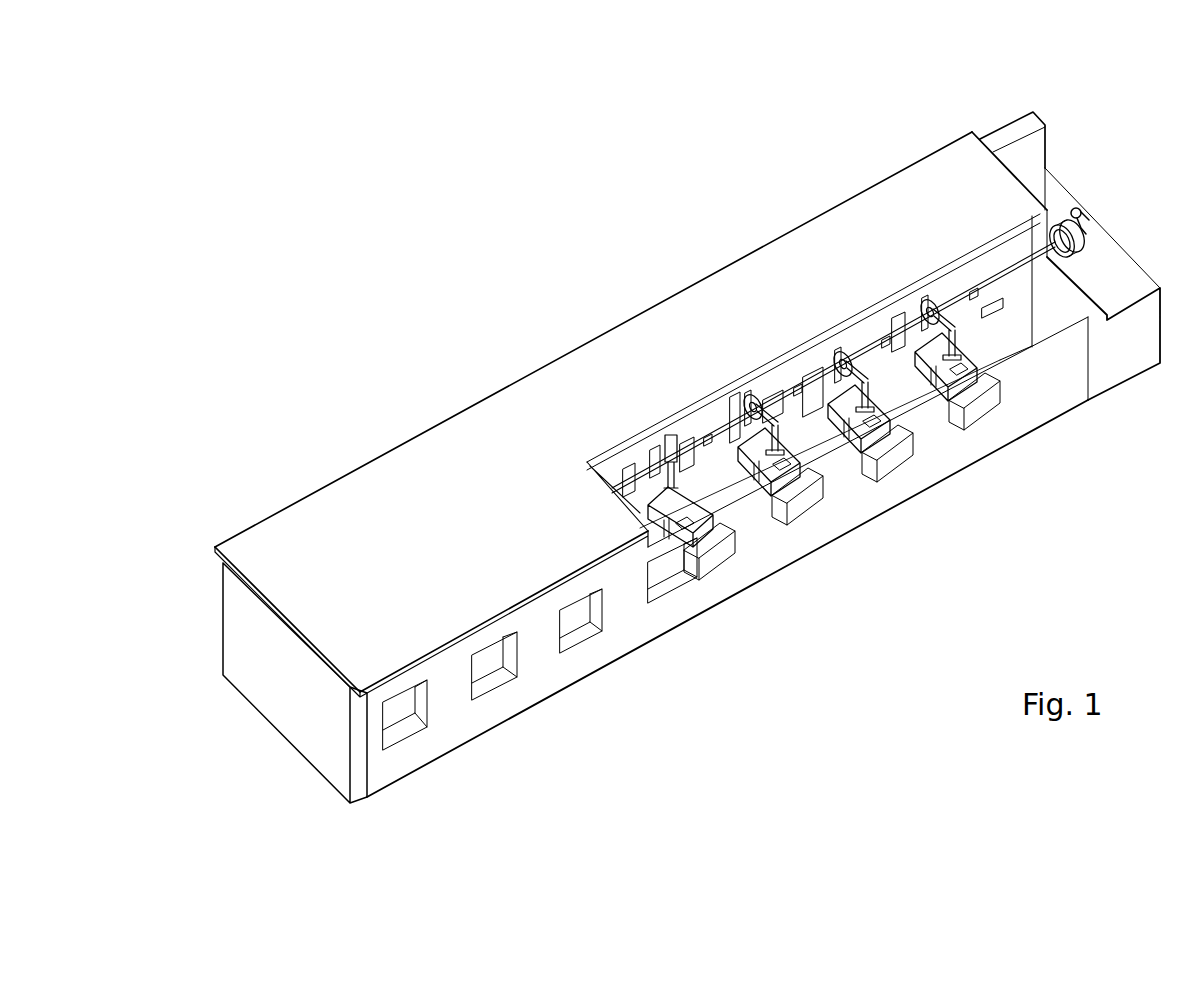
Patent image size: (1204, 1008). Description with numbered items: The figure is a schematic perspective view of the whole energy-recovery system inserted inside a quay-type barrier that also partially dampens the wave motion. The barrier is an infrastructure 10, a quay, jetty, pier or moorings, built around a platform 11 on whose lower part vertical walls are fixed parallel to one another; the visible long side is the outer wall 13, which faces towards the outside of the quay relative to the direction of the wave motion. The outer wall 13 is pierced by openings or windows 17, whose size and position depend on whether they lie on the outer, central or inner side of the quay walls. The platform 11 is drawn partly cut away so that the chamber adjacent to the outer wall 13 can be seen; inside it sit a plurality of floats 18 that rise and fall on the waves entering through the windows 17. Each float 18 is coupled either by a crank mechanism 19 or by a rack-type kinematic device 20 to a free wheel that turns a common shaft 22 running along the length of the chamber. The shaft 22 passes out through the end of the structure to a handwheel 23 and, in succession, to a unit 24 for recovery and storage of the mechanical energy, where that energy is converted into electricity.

The infrastructure 10 is at (342, 461).
The platform 11 is at (828, 250).
The outer wall 13 is at (632, 617).
The windows 17 is at (397, 707).
The floats 18 is at (967, 366).
The crank mechanism 19 is at (932, 276).
The rack-type kinematic device 20 is at (660, 457).
The shaft 22 is at (878, 345).
The handwheel 23 is at (1080, 243).
The unit for recovery and storage of the mechanical energy 24 is at (1083, 207).